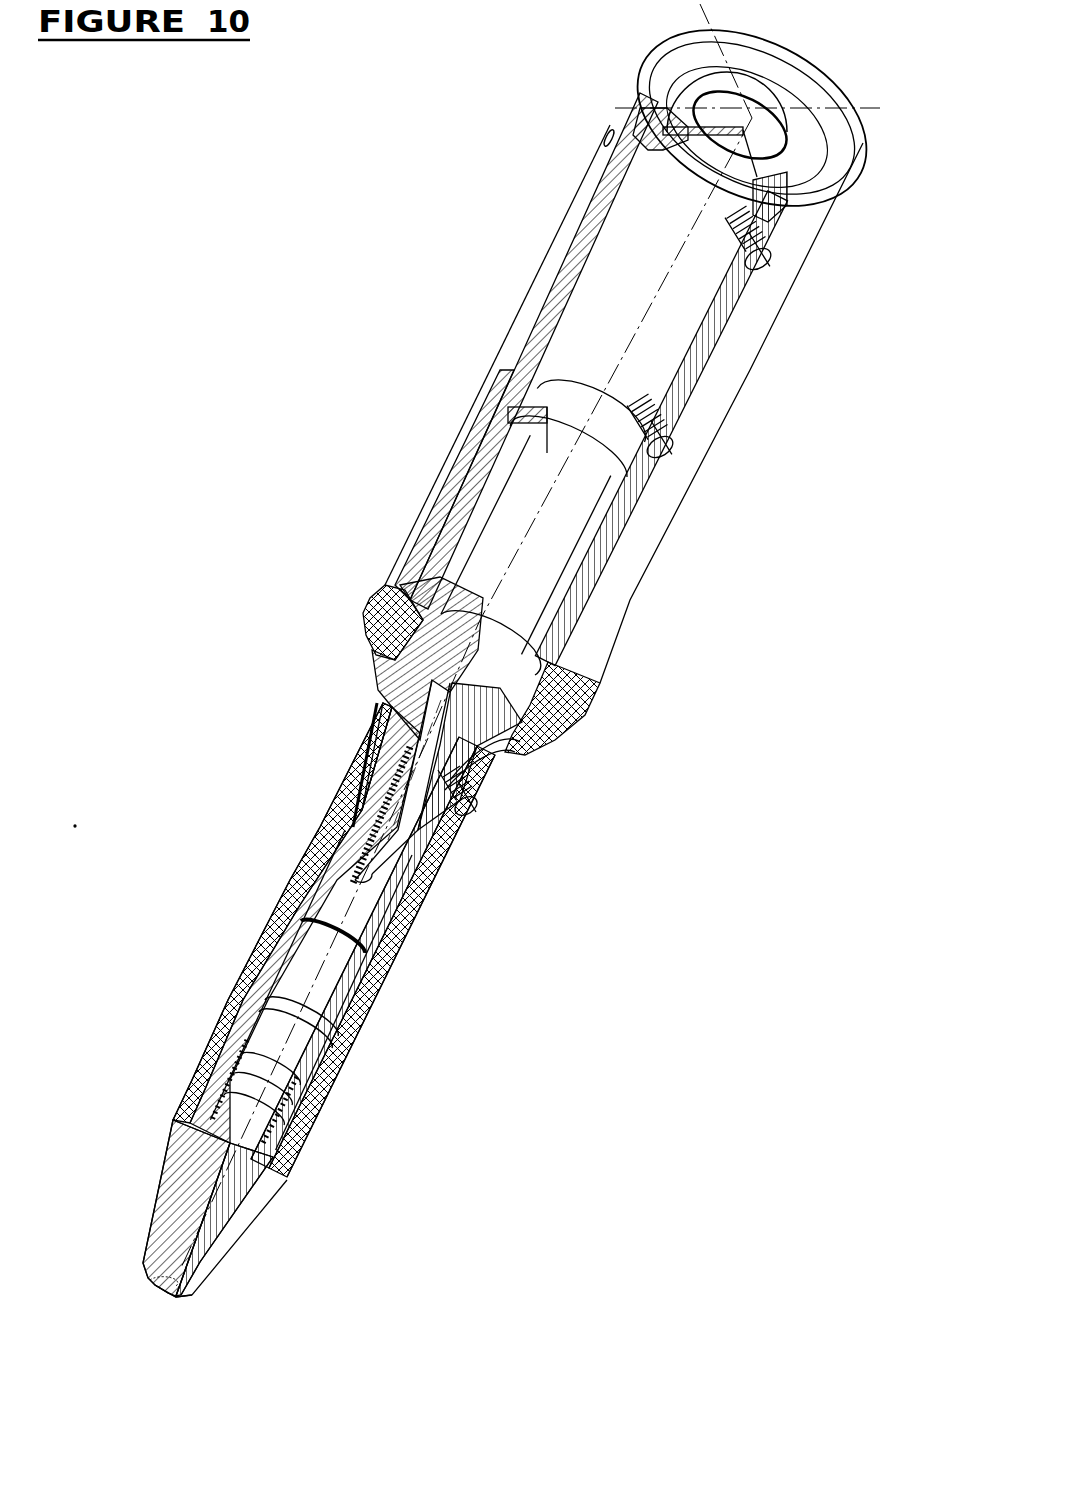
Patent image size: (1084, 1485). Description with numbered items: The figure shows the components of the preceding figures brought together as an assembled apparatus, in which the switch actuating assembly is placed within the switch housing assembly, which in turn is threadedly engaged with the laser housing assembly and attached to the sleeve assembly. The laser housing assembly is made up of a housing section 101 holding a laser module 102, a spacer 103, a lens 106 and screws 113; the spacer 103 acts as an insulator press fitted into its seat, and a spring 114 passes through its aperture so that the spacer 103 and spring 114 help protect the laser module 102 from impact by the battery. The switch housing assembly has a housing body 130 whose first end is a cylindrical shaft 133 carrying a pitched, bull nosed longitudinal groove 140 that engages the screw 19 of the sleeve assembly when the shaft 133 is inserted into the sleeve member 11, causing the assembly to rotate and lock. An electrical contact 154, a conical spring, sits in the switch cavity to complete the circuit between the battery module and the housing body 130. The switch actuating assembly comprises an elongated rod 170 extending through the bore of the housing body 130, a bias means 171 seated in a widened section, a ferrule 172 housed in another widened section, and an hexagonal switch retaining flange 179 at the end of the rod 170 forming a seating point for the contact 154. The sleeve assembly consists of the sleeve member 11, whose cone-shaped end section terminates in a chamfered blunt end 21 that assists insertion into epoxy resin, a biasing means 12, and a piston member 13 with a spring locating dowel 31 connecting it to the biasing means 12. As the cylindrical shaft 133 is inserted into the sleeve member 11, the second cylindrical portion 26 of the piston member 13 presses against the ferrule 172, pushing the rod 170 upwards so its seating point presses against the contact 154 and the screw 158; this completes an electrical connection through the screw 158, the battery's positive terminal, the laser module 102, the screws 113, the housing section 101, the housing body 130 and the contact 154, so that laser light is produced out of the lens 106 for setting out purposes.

The housing section 101 is at (493, 404).
The laser module 102 is at (599, 379).
The lens 106 is at (724, 120).
The screws 113 is at (755, 371).
The spring 114 is at (472, 541).
The housing body 130 is at (271, 629).
The spacer 103 is at (348, 658).
The hexagonal switch retaining flange 179 is at (320, 756).
The elongated rod 170 is at (330, 915).
The cylindrical shaft 133 is at (295, 815).
The longitudinal groove 140 is at (284, 923).
The sleeve member 11 is at (219, 913).
The spring locating dowel 31 is at (188, 1091).
The screw 158 is at (522, 761).
The electrical contact 154 is at (526, 815).
The screw 19 is at (508, 845).
The bias means 171 is at (375, 952).
The ferrule 172 is at (364, 948).
The second cylindrical portion 26 is at (382, 961).
The piston member 13 is at (284, 1196).
The biasing means 12 is at (245, 1208).
The blunt end 21 is at (204, 1316).